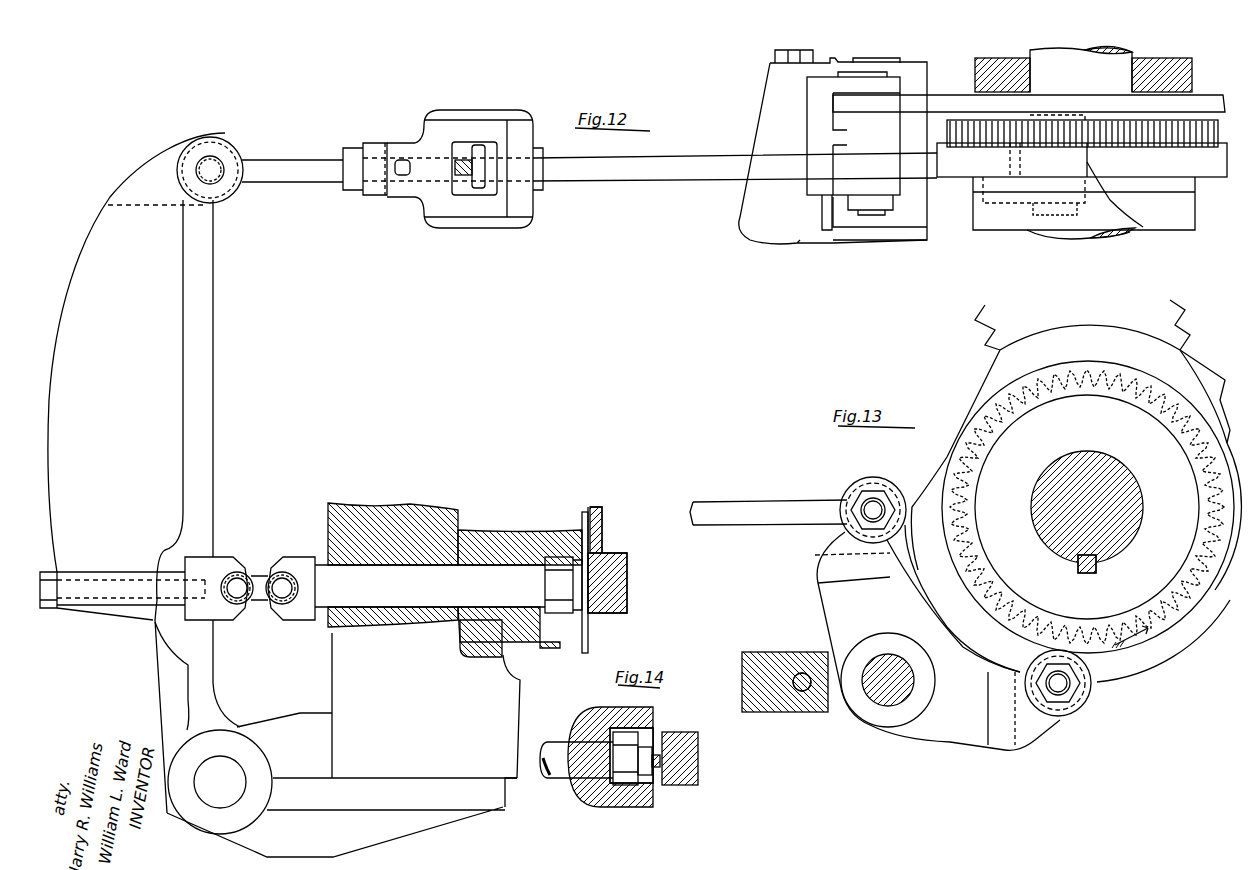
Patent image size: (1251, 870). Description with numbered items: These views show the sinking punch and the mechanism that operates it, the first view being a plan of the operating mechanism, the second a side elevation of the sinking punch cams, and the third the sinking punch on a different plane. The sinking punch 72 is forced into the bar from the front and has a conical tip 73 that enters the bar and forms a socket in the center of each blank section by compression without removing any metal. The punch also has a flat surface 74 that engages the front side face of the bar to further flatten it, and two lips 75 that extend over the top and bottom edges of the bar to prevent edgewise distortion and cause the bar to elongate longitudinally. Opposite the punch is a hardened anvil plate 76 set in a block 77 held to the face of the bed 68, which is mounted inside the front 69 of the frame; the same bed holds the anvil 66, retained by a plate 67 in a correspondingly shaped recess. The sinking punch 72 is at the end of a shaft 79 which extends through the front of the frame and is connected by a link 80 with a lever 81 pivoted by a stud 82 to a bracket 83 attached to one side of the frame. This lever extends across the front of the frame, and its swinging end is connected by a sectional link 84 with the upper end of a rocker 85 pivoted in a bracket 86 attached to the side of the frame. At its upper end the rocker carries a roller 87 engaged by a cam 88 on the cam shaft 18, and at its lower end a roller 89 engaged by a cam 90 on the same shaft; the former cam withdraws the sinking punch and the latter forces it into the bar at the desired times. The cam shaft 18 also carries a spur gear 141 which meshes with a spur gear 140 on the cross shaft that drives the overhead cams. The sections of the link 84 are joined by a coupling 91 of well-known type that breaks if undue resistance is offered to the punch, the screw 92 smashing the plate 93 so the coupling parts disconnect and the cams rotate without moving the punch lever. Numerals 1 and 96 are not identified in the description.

In FIG. 14, the hatched shim 1 is at (658, 770).
In FIG. 12, the cam shaft 18 is at (1083, 69).
In FIG. 13, the cam shaft 18 is at (1100, 505).
In FIG. 12, the anvil 66 is at (574, 642).
In FIG. 12, the plate 67 is at (548, 648).
In FIG. 12, the bed 68 is at (494, 533).
In FIG. 14, the bed 68 is at (573, 720).
In FIG. 12, the front of the frame 69 is at (390, 520).
In FIG. 12, the sinking punch 72 is at (547, 578).
In FIG. 14, the sinking punch 72 is at (613, 762).
In FIG. 12, the conical tip 73 is at (578, 560).
In FIG. 14, the conical tip 73 is at (648, 750).
In FIG. 12, the flat surface 74 is at (575, 590).
In FIG. 14, the flat surface 74 is at (612, 805).
In FIG. 12, the lips 75 is at (590, 600).
In FIG. 14, the lips 75 is at (628, 710).
In FIG. 12, the hardened anvil plate 76 is at (600, 577).
In FIG. 14, the hardened anvil plate 76 is at (698, 760).
In FIG. 12, the block 77 is at (622, 560).
In FIG. 14, the block 77 is at (700, 735).
In FIG. 12, the shaft 79 is at (430, 586).
In FIG. 14, the shaft 79 is at (576, 760).
In FIG. 12, the link 80 is at (262, 564).
In FIG. 12, the lever 81 is at (145, 473).
In FIG. 12, the stud 82 is at (220, 782).
In FIG. 12, the bracket 83 is at (343, 745).
In FIG. 12, the sectional link 84 is at (316, 185).
In FIG. 13, the sectional link 84 is at (762, 501).
In FIG. 12, the rocker 85 is at (833, 197).
In FIG. 13, the rocker 85 is at (937, 637).
In FIG. 13, the bracket 86 is at (787, 652).
In FIG. 12, the roller 87 is at (833, 104).
In FIG. 13, the roller 87 is at (866, 482).
In FIG. 12, the cam 88 is at (955, 95).
In FIG. 13, the cam 88 is at (926, 485).
In FIG. 12, the roller 89 is at (1140, 225).
In FIG. 13, the roller 89 is at (1092, 690).
In FIG. 12, the cam 90 is at (956, 178).
In FIG. 13, the cam 90 is at (1017, 606).
In FIG. 12, the coupling 91 is at (443, 182).
In FIG. 12, the screw 92 is at (461, 160).
In FIG. 12, the plate 93 is at (482, 145).
In FIG. 12, the support frame 96 is at (833, 147).
In FIG. 13, the spur gear 140 is at (995, 345).
In FIG. 12, the spur gear 141 is at (1192, 143).
In FIG. 13, the spur gear 141 is at (1150, 400).